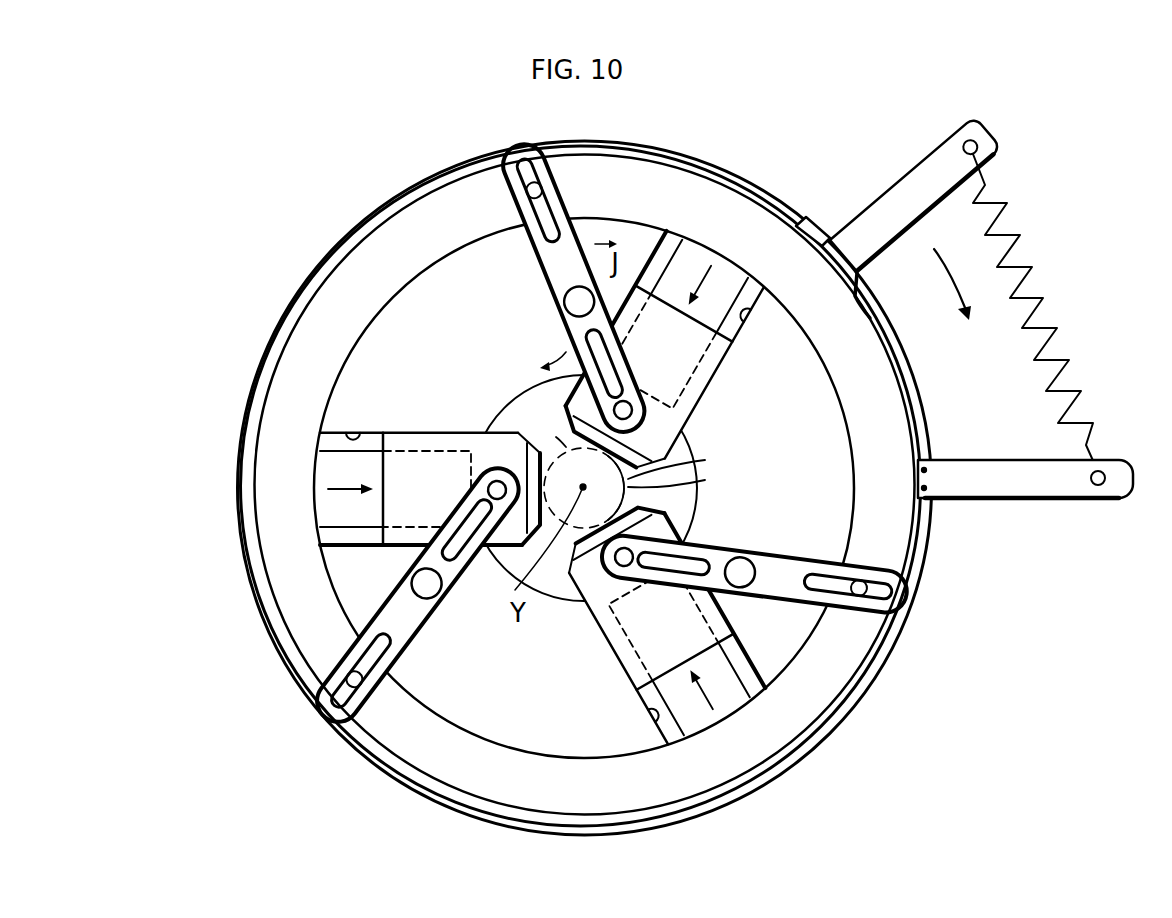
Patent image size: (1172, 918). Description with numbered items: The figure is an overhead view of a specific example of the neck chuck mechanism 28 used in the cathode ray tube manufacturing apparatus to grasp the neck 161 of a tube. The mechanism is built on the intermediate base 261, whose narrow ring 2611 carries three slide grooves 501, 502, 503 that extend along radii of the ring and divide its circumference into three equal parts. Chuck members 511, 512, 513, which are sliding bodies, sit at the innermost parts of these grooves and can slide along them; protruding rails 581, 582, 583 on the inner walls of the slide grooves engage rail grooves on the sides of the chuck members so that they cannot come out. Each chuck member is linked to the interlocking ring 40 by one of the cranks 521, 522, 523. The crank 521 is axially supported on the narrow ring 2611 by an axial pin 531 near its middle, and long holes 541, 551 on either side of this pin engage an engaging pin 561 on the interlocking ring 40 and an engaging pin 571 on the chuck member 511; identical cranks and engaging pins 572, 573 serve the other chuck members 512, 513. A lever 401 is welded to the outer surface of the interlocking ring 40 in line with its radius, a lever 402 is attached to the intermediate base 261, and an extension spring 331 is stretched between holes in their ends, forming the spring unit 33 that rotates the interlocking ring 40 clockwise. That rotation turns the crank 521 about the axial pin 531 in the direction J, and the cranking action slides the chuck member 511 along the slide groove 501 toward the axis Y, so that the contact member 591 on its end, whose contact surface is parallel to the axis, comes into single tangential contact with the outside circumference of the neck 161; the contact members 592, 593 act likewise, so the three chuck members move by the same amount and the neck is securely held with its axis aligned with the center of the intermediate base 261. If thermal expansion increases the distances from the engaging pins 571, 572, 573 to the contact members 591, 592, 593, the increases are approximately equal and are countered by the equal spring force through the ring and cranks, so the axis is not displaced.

The neck chuck mechanism 28 is at (274, 280).
The extension spring unit 33 is at (1030, 154).
The interlocking ring 40 is at (760, 222).
The neck 161 is at (697, 461).
The intermediate base 261 is at (898, 660).
The narrow ring 2611 is at (820, 525).
The extension spring 331 is at (1076, 363).
The lever 401 is at (930, 165).
The lever 402 is at (1053, 488).
The slide groove 501 is at (745, 310).
The slide groove 502 is at (655, 713).
The slide groove 503 is at (368, 432).
The chuck member 511 is at (690, 418).
The chuck member 512 is at (613, 640).
The chuck member 513 is at (448, 432).
The crank 521 is at (527, 245).
The crank 522 is at (780, 560).
The crank 523 is at (422, 622).
The axial pin 531 is at (575, 312).
The long hole 541 is at (552, 214).
The long hole 551 is at (610, 350).
The engaging pin 561 is at (500, 185).
The engaging pin 571 is at (628, 404).
The engaging pin 572 is at (615, 570).
The engaging pin 573 is at (492, 497).
The protruding rail 581 is at (662, 238).
The protruding rail 582 is at (687, 715).
The protruding rail 583 is at (330, 512).
The contact member 591 is at (562, 440).
The contact member 592 is at (705, 481).
The contact member 593 is at (584, 488).